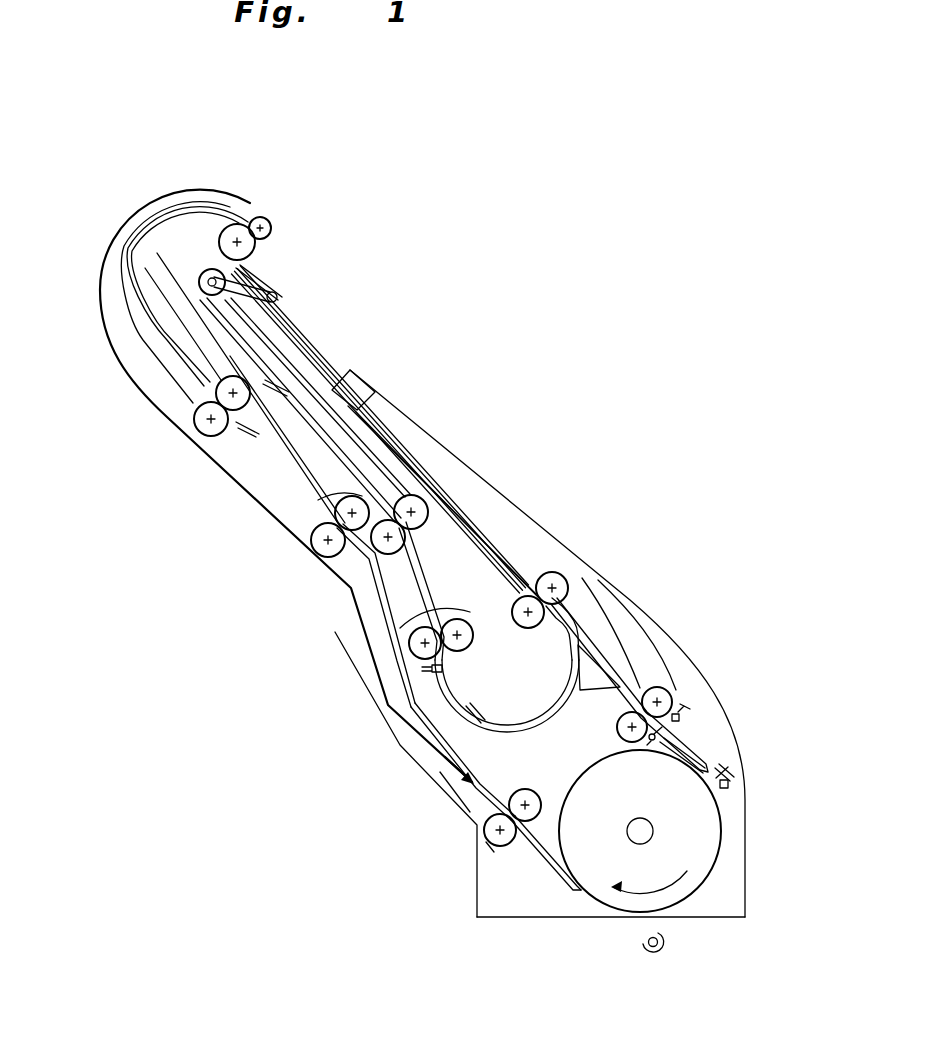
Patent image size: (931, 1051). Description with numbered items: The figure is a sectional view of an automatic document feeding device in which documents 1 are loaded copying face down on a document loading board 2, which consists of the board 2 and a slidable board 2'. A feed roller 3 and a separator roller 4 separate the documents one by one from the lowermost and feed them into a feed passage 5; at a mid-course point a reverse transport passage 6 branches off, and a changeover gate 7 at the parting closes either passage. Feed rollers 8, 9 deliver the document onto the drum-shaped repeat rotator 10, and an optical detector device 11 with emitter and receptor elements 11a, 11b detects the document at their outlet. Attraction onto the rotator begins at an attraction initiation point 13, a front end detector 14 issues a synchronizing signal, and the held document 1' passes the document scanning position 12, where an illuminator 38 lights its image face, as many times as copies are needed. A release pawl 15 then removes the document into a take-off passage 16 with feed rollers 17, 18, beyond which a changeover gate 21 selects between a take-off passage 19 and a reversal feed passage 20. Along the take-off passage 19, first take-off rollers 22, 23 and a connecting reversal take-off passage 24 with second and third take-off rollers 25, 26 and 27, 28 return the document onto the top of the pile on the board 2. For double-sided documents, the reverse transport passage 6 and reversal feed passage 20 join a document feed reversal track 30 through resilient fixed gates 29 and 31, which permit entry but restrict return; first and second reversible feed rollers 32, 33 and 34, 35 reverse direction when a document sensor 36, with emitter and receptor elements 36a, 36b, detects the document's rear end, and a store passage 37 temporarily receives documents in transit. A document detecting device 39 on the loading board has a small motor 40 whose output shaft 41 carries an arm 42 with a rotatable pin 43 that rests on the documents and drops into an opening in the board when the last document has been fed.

The document 1 is at (450, 504).
The document 1' is at (442, 483).
The document loading board 2 is at (411, 375).
The board 2' is at (380, 429).
The feed roller 3 is at (517, 590).
The separator roller 4 is at (558, 574).
The feed passage 5 is at (635, 688).
The reverse transport passage 6 is at (607, 658).
The changeover gate 7 is at (582, 640).
The feed roller 8 is at (672, 698).
The feed roller 9 is at (665, 688).
The repeat rotator 10 is at (703, 860).
The optical detector device 11 is at (684, 718).
The emitter element 11a is at (662, 737).
The receptor element 11b is at (700, 750).
The document scanning position 12 is at (640, 915).
The attraction initiation point 13 is at (730, 773).
The front end detector 14 is at (729, 786).
The release pawl 15 is at (558, 870).
The take-off passage 16 is at (540, 852).
The feed roller 17 is at (475, 832).
The feed roller 18 is at (490, 836).
The take-off passage 19 is at (490, 790).
The reversal feed passage 20 is at (512, 797).
The changeover gate 21 is at (492, 838).
The first take-off roller 22 is at (318, 545).
The first take-off roller 23 is at (320, 497).
The connecting reversal take-off passage 24 is at (130, 255).
The second take-off roller 25 is at (200, 428).
The second take-off roller 26 is at (237, 405).
The third take-off roller 27 is at (268, 218).
The third take-off roller 28 is at (237, 224).
The fixed gate 29 is at (682, 672).
The document feed reversal track 30 is at (527, 727).
The fixed gate 31 is at (478, 760).
The first reversible feed roller 32 is at (424, 628).
The first reversible feed roller 33 is at (415, 650).
The second reversible feed roller 34 is at (412, 541).
The second reversible feed roller 35 is at (385, 545).
The document sensor 36 is at (462, 708).
The emitter element 36a is at (467, 660).
The receptor element 36b is at (441, 677).
The store passage 37 is at (247, 362).
The illuminator 38 is at (663, 953).
The document detecting device 39 is at (205, 266).
The small motor 40 is at (203, 278).
The output shaft 41 is at (218, 296).
The arm 42 is at (243, 273).
The rotatable pin 43 is at (277, 297).